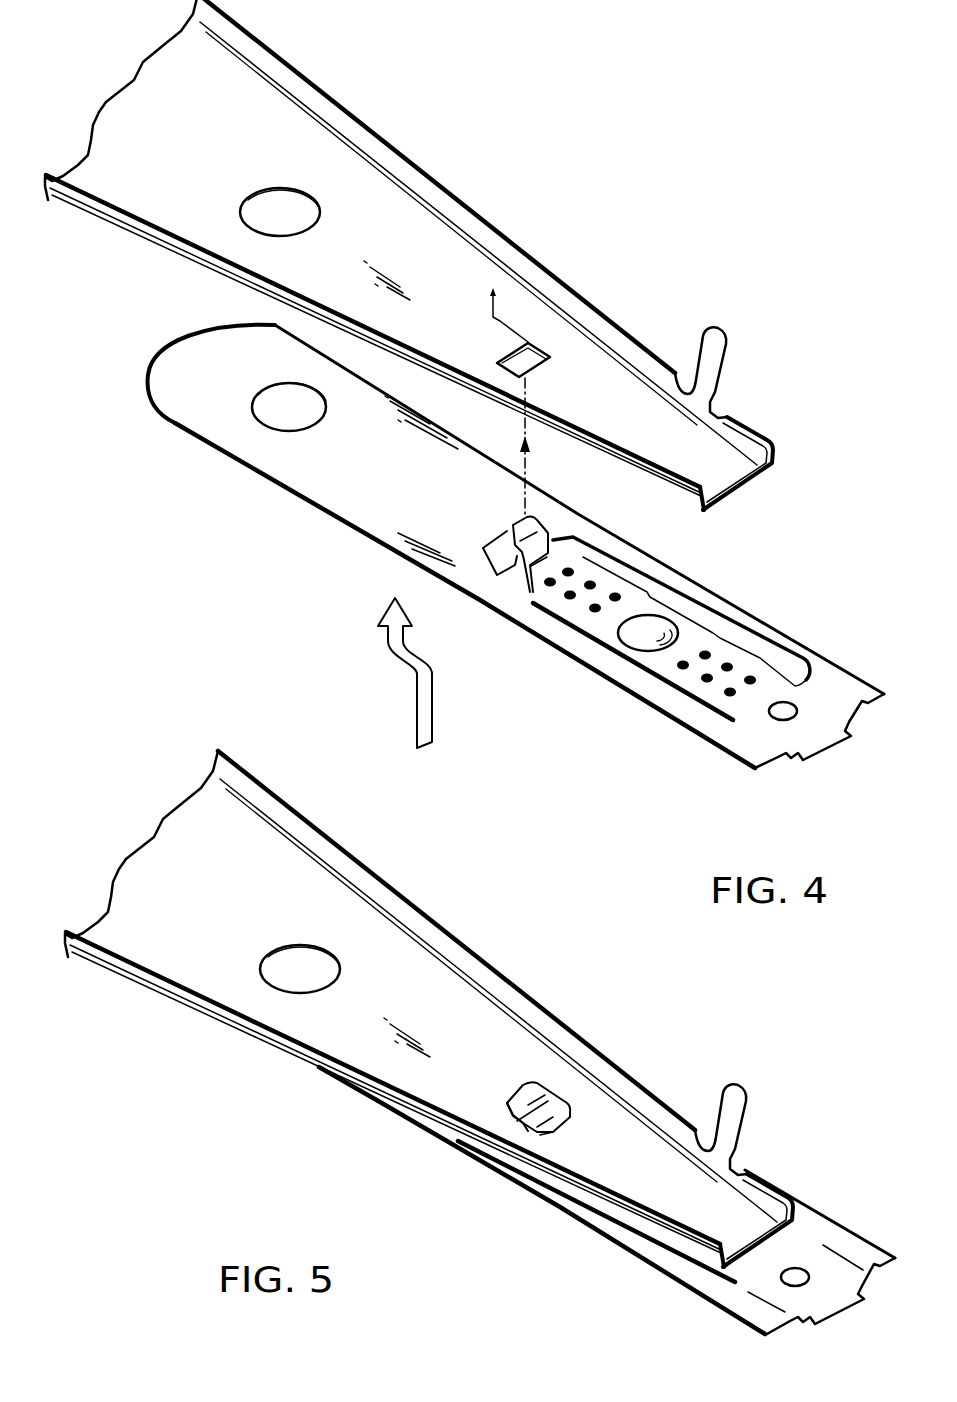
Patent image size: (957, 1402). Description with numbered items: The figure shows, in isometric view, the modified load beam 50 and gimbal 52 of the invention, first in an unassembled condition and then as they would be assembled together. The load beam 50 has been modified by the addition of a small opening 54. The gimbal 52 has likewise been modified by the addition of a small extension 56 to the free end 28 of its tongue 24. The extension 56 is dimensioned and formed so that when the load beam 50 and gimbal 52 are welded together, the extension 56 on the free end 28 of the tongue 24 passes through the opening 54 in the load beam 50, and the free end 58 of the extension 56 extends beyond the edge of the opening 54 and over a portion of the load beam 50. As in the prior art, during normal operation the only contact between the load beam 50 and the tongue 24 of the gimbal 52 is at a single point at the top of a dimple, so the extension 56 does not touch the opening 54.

In FIG. 4, the tongue 24 is at (643, 657).
In FIG. 4, the free end of the tongue 28 is at (540, 570).
In FIG. 4, the load beam 50 is at (452, 172).
In FIG. 4, the gimbal 52 is at (322, 515).
In FIG. 5, the gimbal 52 is at (656, 1282).
In FIG. 4, the opening 54 is at (537, 352).
In FIG. 5, the opening 54 is at (552, 1133).
In FIG. 4, the extension 56 is at (513, 578).
In FIG. 5, the extension 56 is at (531, 1128).
In FIG. 4, the free end of the extension 58 is at (526, 531).
In FIG. 5, the free end of the extension 58 is at (537, 1092).